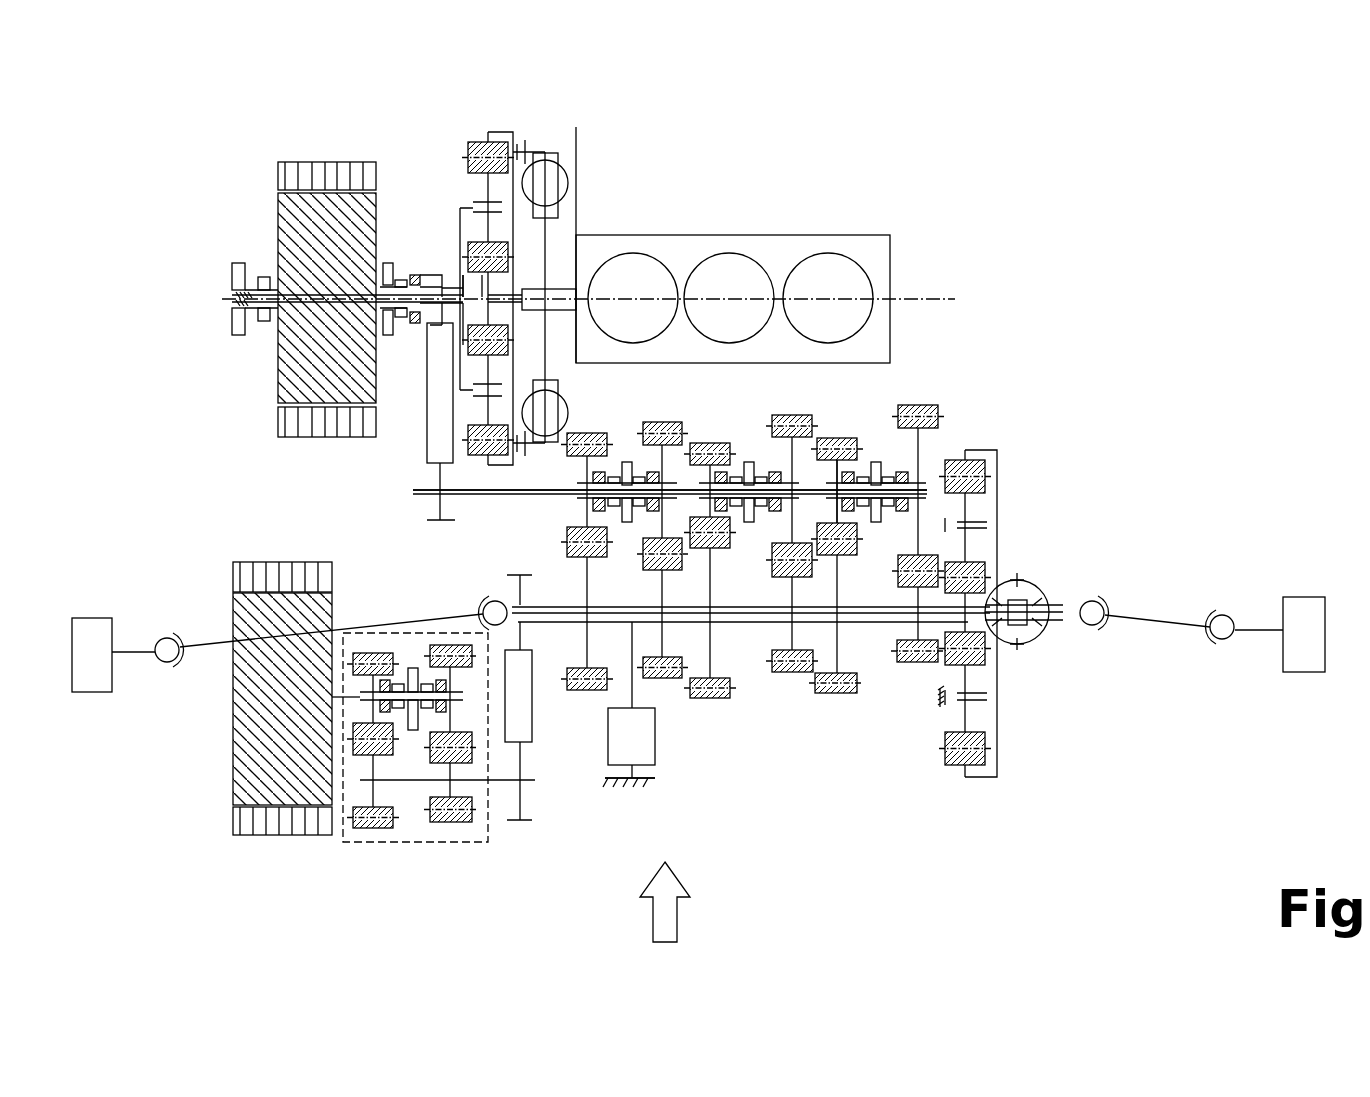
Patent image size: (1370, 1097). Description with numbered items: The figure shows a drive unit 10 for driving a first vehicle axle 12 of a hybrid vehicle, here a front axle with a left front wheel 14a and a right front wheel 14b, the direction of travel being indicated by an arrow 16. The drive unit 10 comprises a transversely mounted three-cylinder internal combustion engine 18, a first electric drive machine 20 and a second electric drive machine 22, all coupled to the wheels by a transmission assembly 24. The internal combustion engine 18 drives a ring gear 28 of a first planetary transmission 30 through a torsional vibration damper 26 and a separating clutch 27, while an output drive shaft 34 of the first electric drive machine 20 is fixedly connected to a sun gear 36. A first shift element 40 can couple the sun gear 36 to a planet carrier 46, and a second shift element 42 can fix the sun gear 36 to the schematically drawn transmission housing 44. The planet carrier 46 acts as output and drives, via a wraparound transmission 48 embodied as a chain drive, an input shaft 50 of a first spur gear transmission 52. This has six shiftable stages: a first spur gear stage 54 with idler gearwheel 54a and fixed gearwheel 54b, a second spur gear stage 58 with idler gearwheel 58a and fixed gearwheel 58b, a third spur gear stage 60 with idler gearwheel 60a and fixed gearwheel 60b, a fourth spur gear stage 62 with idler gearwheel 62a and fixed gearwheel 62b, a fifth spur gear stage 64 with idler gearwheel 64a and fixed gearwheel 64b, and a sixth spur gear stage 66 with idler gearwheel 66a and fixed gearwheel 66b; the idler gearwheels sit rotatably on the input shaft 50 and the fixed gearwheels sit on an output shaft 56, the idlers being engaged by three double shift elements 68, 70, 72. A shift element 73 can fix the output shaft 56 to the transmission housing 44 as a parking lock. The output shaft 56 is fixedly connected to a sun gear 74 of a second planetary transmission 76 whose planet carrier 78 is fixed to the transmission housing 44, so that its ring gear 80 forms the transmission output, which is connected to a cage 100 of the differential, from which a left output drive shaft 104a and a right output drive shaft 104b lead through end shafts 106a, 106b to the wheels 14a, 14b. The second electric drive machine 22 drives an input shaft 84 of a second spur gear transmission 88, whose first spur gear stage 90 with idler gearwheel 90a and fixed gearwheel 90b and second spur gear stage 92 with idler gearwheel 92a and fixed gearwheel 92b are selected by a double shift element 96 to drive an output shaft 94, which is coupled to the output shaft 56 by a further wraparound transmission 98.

The drive unit 10 is at (1062, 188).
The first vehicle axle 12 is at (701, 645).
The left front wheel 14a is at (90, 618).
The right front wheel 14b is at (1305, 672).
The arrow 16 is at (677, 912).
The internal combustion engine 18 is at (815, 238).
The first electric drive machine 20 is at (290, 165).
The second electric drive machine 22 is at (270, 855).
The transmission assembly 24 is at (1040, 395).
The torsional vibration damper 26 is at (568, 185).
The separating clutch 27 is at (527, 150).
The ring gear 28 is at (505, 140).
The first planetary transmission 30 is at (501, 256).
The output drive shaft 34 is at (387, 302).
The sun gear 36 is at (445, 275).
The first shift element 40 is at (415, 335).
The second shift element 42 is at (225, 325).
The transmission housing 44 is at (230, 305).
The planet carrier 46 is at (463, 278).
The wraparound transmission 48 is at (410, 472).
The input shaft 50 is at (480, 491).
The first spur gear transmission 52 is at (985, 375).
The first shiftable spur gear stage 54 is at (590, 430).
The idler gearwheel 54a is at (582, 528).
The fixed gearwheel 54b is at (582, 668).
The output shaft 56 is at (862, 622).
The second shiftable spur gear stage 58 is at (665, 420).
The idler gearwheel 58a is at (715, 440).
The fixed gearwheel 58b is at (680, 635).
The third shiftable spur gear stage 60 is at (790, 413).
The idler gearwheel 60a is at (722, 600).
The fixed gearwheel 60b is at (728, 688).
The fourth shiftable spur gear stage 62 is at (798, 413).
The idler gearwheel 62a is at (840, 438).
The fixed gearwheel 62b is at (790, 635).
The fifth spur gear stage 64 is at (862, 437).
The idler gearwheel 64a is at (855, 530).
The fixed gearwheel 64b is at (832, 640).
The sixth spur gear stage 66 is at (925, 400).
The idler gearwheel 66a is at (920, 440).
The fixed gearwheel 66b is at (900, 625).
The double shift element 68 is at (627, 455).
The double shift element 70 is at (749, 522).
The double shift element 72 is at (905, 465).
The shift element 73 is at (655, 770).
The sun gear 74 is at (985, 655).
The second planetary transmission 76 is at (1032, 666).
The planet carrier 78 is at (985, 700).
The ring gear 80 is at (998, 505).
The input shaft 84 is at (337, 697).
The second spur gear transmission 88 is at (464, 743).
The first spur gear stage 90 is at (404, 761).
The idler gearwheel 90a is at (380, 652).
The fixed gearwheel 90b is at (380, 792).
The second spur gear stage 92 is at (500, 761).
The idler gearwheel 92a is at (452, 645).
The fixed gearwheel 92b is at (478, 755).
The output shaft 94 is at (530, 782).
The shift element 96 is at (413, 648).
The wraparound transmission 98 is at (533, 700).
The cage 100 is at (1035, 590).
The left output drive shaft 104a is at (500, 602).
The right output drive shaft 104b is at (1085, 625).
The end shaft 106a is at (197, 640).
The end shaft 106b is at (1210, 640).